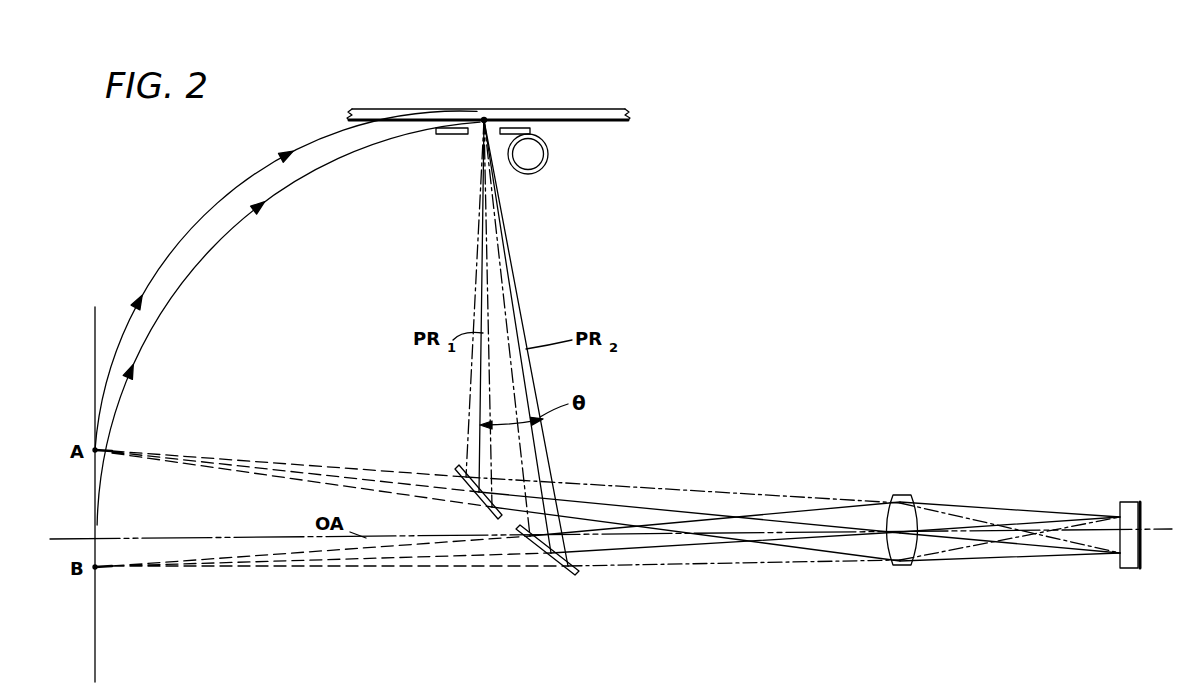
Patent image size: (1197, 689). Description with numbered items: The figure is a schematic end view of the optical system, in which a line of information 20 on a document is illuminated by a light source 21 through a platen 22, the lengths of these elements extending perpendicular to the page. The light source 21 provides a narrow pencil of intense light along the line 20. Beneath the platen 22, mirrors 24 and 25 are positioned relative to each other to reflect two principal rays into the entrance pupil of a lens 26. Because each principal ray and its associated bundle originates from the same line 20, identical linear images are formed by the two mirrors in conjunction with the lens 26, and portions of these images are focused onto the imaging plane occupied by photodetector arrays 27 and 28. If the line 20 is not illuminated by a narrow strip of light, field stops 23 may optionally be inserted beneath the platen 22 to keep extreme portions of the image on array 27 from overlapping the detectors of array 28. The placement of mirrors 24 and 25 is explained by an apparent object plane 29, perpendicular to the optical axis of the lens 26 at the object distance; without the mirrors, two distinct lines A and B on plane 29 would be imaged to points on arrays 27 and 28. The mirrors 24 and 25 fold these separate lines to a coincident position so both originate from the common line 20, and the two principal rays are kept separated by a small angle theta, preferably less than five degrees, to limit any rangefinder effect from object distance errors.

The line of information 20 is at (503, 102).
The light source 21 is at (547, 165).
The platen 22 is at (612, 107).
The field stops 23 is at (505, 134).
The mirror 24 is at (460, 468).
The mirror 25 is at (580, 575).
The lens 26 is at (904, 567).
The photodetector array 27 is at (1141, 569).
The photodetector array 28 is at (1141, 504).
The apparent object plane 29 is at (98, 640).